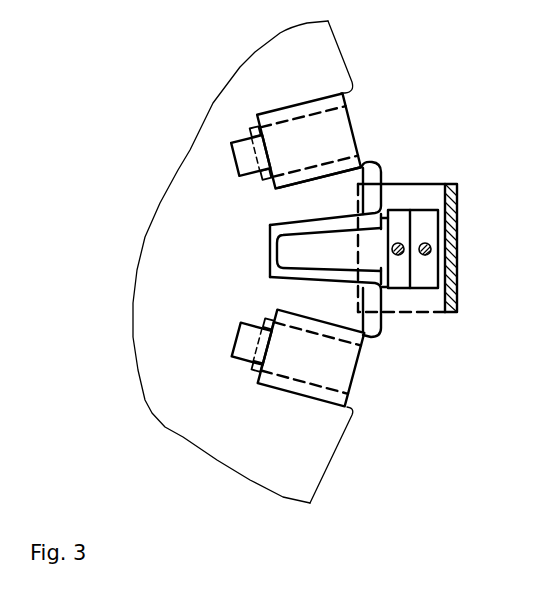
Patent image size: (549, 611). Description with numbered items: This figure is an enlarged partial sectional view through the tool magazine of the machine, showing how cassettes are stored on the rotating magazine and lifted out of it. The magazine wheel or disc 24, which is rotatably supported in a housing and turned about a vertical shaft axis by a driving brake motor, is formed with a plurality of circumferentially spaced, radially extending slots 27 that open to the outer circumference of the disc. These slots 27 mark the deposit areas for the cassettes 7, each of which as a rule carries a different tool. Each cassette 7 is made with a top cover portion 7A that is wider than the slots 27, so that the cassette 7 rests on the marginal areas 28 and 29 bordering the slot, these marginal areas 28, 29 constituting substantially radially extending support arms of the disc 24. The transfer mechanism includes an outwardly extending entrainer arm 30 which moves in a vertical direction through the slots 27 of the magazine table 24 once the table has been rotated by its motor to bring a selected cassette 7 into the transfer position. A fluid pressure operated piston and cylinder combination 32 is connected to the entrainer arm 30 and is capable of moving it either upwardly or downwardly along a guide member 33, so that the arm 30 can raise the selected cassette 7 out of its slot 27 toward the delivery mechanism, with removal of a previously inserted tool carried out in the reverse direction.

The cassette 7 is at (285, 153).
The top cover portion 7A is at (272, 382).
The magazine wheel or disc 24 is at (318, 467).
The slots 27 is at (358, 118).
The marginal area 28 is at (295, 110).
The marginal area 29 is at (283, 170).
The entrainer arm 30 is at (420, 302).
The fluid pressure operated piston and cylinder combination 32 is at (431, 249).
The guide member 33 is at (404, 246).